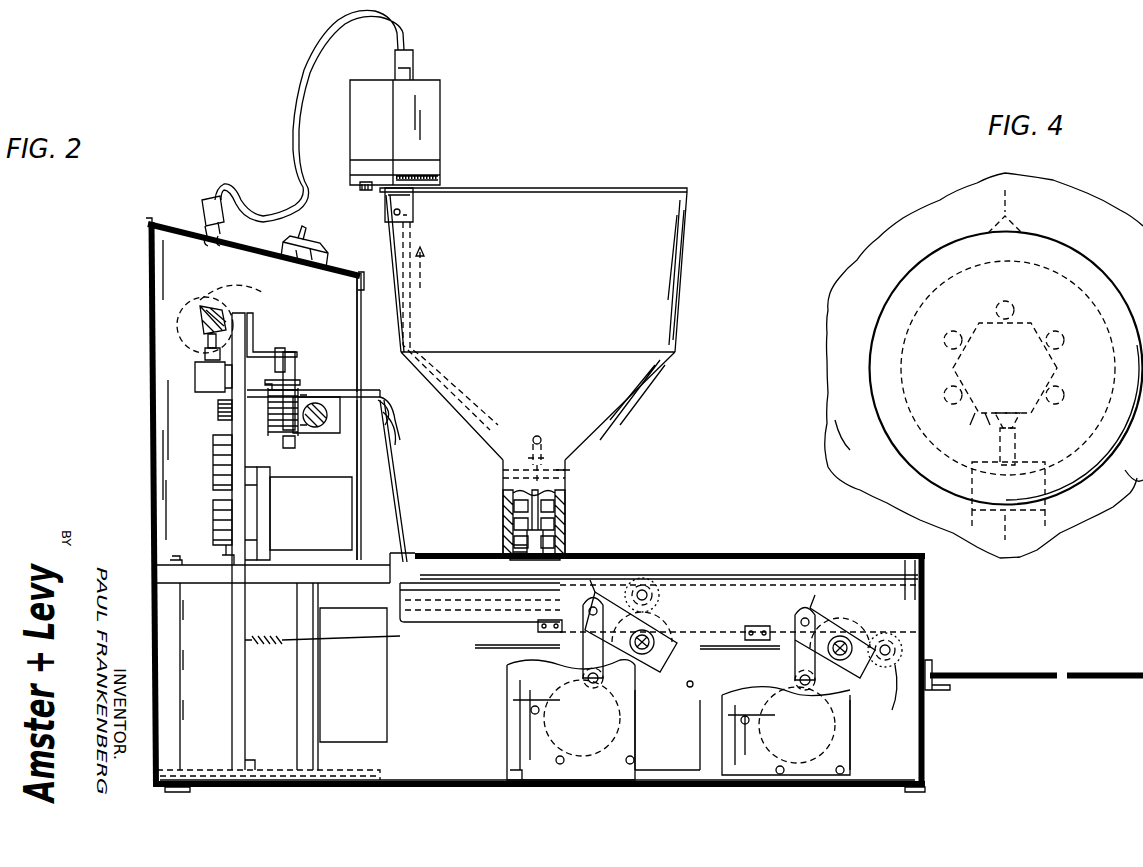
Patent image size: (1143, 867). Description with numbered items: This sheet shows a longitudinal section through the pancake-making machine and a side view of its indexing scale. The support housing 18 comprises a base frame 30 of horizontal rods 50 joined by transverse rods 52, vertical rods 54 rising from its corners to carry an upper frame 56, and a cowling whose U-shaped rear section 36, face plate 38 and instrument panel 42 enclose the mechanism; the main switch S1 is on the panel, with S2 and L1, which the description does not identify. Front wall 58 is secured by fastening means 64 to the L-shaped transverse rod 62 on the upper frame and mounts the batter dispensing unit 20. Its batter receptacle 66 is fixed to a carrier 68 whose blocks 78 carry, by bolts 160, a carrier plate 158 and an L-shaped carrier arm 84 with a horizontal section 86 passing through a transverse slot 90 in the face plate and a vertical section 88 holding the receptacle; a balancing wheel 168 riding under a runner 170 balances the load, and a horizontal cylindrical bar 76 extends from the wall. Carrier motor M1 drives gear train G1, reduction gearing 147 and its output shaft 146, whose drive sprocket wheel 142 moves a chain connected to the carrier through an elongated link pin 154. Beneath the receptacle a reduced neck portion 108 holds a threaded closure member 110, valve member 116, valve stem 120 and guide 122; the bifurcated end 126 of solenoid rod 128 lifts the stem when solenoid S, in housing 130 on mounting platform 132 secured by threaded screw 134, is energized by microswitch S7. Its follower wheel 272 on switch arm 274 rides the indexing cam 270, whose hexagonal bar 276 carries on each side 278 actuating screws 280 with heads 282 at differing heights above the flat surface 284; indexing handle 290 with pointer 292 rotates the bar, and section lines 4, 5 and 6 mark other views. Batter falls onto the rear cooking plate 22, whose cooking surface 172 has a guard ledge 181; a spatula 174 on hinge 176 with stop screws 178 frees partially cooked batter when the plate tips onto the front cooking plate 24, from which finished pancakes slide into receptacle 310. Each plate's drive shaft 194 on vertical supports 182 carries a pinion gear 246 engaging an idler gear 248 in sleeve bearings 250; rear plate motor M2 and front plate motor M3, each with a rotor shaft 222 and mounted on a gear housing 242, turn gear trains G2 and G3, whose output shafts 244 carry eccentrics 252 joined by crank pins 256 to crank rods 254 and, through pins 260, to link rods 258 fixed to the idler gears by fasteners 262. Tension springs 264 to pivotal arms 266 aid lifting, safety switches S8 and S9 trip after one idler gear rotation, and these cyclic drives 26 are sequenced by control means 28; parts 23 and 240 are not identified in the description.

In FIG. 4, the section line 4 is at (1005, 536).
In FIG. 4, the section line 5 is at (875, 442).
In FIG. 4, the section line 6 is at (875, 298).
In FIG. 2, the support housing 18 is at (226, 757).
In FIG. 2, the batter dispensing unit 20 is at (510, 178).
In FIG. 2, the rear cooking plate 22 is at (500, 592).
In FIG. 4, the plate 23 is at (1134, 489).
In FIG. 2, the front cooking plate 24 is at (728, 622).
In FIG. 2, the cyclic drives 26 is at (486, 686).
In FIG. 2, the control means 28 is at (396, 706).
In FIG. 2, the base frame 30 is at (478, 788).
In FIG. 2, the rear section 36 is at (152, 440).
In FIG. 2, the face plate 38 is at (362, 352).
In FIG. 2, the instrument panel 42 is at (185, 205).
In FIG. 2, the horizontal rods 50 is at (922, 790).
In FIG. 2, the rods 52 is at (485, 770).
In FIG. 2, the vertical rods 54 is at (180, 665).
In FIG. 2, the upper frame 56 is at (182, 562).
In FIG. 2, the front wall 58 is at (232, 628).
In FIG. 2, the transverse rod 62 is at (226, 575).
In FIG. 2, the fastening means 64 is at (230, 556).
In FIG. 2, the batter receptacle 66 is at (683, 270).
In FIG. 2, the carrier 68 is at (296, 365).
In FIG. 2, the cylindrical bar 76 is at (316, 428).
In FIG. 2, the blocks 78 is at (336, 436).
In FIG. 2, the carrier arm 84 is at (384, 402).
In FIG. 2, the horizontal section 86 is at (361, 386).
In FIG. 2, the vertical section 88 is at (378, 312).
In FIG. 2, the transverse slot 90 is at (360, 388).
In FIG. 2, the neck portion 108 is at (568, 530).
In FIG. 2, the closure member 110 is at (500, 520).
In FIG. 2, the valve member 116 is at (500, 537).
In FIG. 2, the valve stem 120 is at (566, 505).
In FIG. 2, the guide 122 is at (502, 472).
In FIG. 2, the bifurcated end 126 is at (546, 432).
In FIG. 2, the solenoid rod 128 is at (418, 360).
In FIG. 2, the solenoid housing 130 is at (442, 108).
In FIG. 2, the mounting platform 132 is at (443, 180).
In FIG. 2, the threaded screw 134 is at (362, 190).
In FIG. 2, the drive sprocket wheel 142 is at (272, 480).
In FIG. 2, the output shaft 146 is at (216, 413).
In FIG. 2, the reduction gearing arrangement 147 is at (222, 470).
In FIG. 2, the link pin 154 is at (284, 442).
In FIG. 2, the carrier plate 158 is at (303, 384).
In FIG. 2, the bolts 160 is at (290, 396).
In FIG. 2, the balancing wheel 168 is at (283, 358).
In FIG. 2, the runner 170 is at (262, 345).
In FIG. 2, the cooking surface 172 is at (440, 590).
In FIG. 2, the spatula 174 is at (394, 486).
In FIG. 2, the hinge 176 is at (380, 415).
In FIG. 2, the stop screws 178 is at (385, 435).
In FIG. 2, the guard ledge 181 is at (658, 555).
In FIG. 2, the vertical supports 182 is at (895, 598).
In FIG. 2, the drive shaft 194 is at (895, 655).
In FIG. 2, the motor shaft 222 is at (742, 722).
In FIG. 2, the motor mount 240 is at (735, 714).
In FIG. 2, the gear housing 242 is at (650, 722).
In FIG. 2, the output shaft 244 is at (689, 721).
In FIG. 2, the pinion gear 246 is at (900, 642).
In FIG. 2, the idler gear 248 is at (864, 612).
In FIG. 2, the sleeve bearings 250 is at (680, 650).
In FIG. 2, the eccentric 252 is at (768, 690).
In FIG. 2, the crank rod 254 is at (770, 650).
In FIG. 2, the crank pin 256 is at (600, 688).
In FIG. 2, the link rod 258 is at (825, 608).
In FIG. 2, the pin 260 is at (795, 640).
In FIG. 2, the fasteners 262 is at (565, 765).
In FIG. 2, the tension spring 264 is at (274, 652).
In FIG. 2, the pivotal arm 266 is at (890, 720).
In FIG. 2, the indexing cam 270 is at (182, 330).
In FIG. 4, the indexing cam 270 is at (1036, 325).
In FIG. 4, the follower wheel 272 is at (1020, 428).
In FIG. 4, the switch arm 274 is at (1018, 446).
In FIG. 2, the bar 276 is at (212, 305).
In FIG. 4, the bar 276 is at (948, 385).
In FIG. 4, the side 278 is at (985, 422).
In FIG. 4, the actuating screws 280 is at (945, 345).
In FIG. 4, the screw head 282 is at (1062, 362).
In FIG. 4, the flat surface 284 is at (990, 318).
In FIG. 2, the indexing handle 290 is at (232, 282).
In FIG. 4, the indexing handle 290 is at (1110, 262).
In FIG. 4, the pointer 292 is at (1022, 228).
In FIG. 2, the receptacle 310 is at (1032, 672).
In FIG. 2, the solenoid S is at (309, 116).
In FIG. 2, the main switch S1 is at (303, 230).
In FIG. 2, the switch S2 is at (329, 250).
In FIG. 2, the microswitch S7 is at (196, 382).
In FIG. 2, the safety micro-switch S8 is at (537, 624).
In FIG. 2, the safety micro-switch S9 is at (762, 627).
In FIG. 2, the lamp L1 is at (224, 220).
In FIG. 2, the carrier motor M1 is at (316, 510).
In FIG. 2, the rear plate motor M2 is at (571, 722).
In FIG. 2, the front plate motor M3 is at (786, 735).
In FIG. 2, the carrier gear train G1 is at (265, 542).
In FIG. 2, the rear plate gear train G2 is at (638, 726).
In FIG. 2, the front plate gear train G3 is at (856, 708).